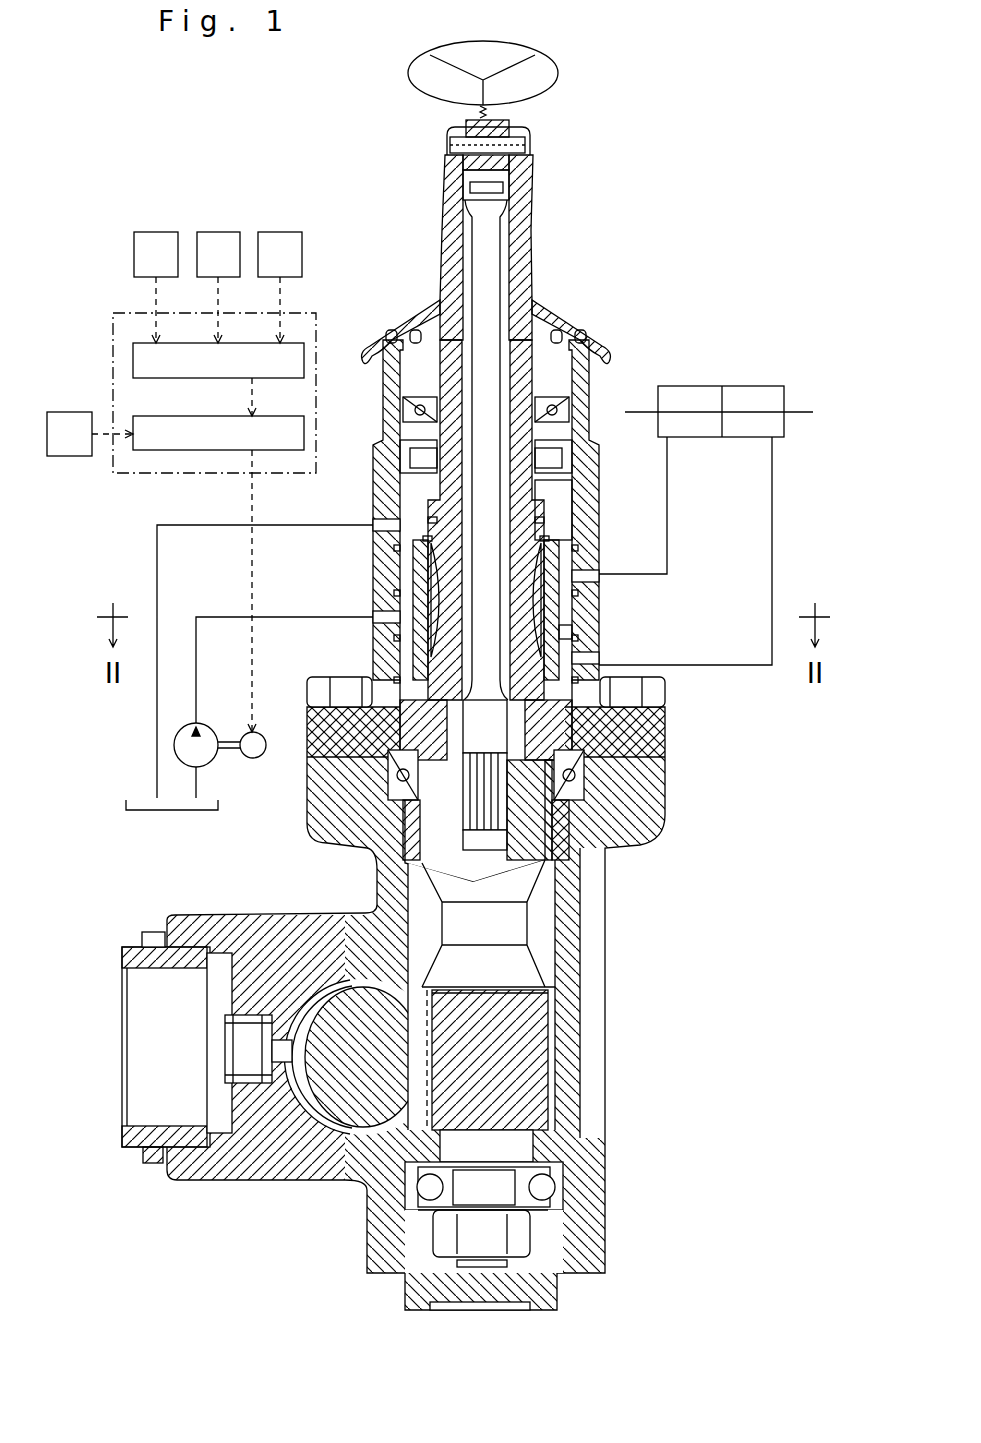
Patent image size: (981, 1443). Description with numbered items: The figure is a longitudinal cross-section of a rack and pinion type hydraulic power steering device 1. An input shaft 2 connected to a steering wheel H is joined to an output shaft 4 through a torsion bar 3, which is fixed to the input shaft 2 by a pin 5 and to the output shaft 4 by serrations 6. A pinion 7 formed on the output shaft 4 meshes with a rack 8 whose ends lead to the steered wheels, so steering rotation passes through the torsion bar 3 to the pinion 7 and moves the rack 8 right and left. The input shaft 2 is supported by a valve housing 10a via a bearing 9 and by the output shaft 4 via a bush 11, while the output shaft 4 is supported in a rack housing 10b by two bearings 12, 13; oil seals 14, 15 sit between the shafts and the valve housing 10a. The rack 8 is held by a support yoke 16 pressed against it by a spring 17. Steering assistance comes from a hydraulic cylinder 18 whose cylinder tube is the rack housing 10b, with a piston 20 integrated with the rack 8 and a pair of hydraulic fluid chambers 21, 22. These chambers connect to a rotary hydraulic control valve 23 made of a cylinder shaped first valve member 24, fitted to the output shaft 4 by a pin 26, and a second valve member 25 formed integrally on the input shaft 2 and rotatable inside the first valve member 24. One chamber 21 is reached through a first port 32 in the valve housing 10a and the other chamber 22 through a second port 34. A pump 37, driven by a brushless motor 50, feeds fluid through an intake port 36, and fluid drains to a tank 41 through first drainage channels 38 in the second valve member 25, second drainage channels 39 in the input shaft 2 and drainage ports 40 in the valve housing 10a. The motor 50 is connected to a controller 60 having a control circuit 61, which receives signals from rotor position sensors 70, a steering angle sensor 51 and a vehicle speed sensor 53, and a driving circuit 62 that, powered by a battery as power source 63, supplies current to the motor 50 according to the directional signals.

The steering wheel H is at (553, 88).
The hydraulic power steering device 1 is at (550, 161).
The input shaft 2 is at (533, 210).
The torsion bar 3 is at (490, 250).
The output shaft 4 is at (522, 897).
The pin 5 is at (450, 146).
The serrations 6 is at (535, 818).
The pinion 7 is at (531, 1038).
The rack 8 is at (355, 1098).
The bearing 9 is at (410, 458).
The valve housing 10a is at (383, 488).
The rack housing 10b is at (572, 1079).
The bush 11 is at (663, 737).
The bearing 12 is at (605, 860).
The bearing 13 is at (545, 1188).
The oil seal 14 is at (405, 413).
The oil seal 15 is at (576, 778).
The support yoke 16 is at (281, 1123).
The spring 17 is at (238, 1093).
The hydraulic cylinder 18 is at (750, 372).
The piston 20 is at (723, 427).
The hydraulic fluid chamber 21 is at (692, 433).
The hydraulic fluid chamber 22 is at (764, 393).
The hydraulic control valve 23 is at (570, 530).
The first valve member 24 is at (560, 608).
The second valve member 25 is at (560, 636).
The pin 26 is at (410, 703).
The first port 32 is at (575, 570).
The second port 34 is at (593, 658).
The intake port 36 is at (400, 603).
The pump 37 is at (196, 733).
The first drainage channels 38 is at (400, 640).
The second drainage channels 39 is at (430, 520).
The drainage ports 40 is at (395, 540).
The tank 41 is at (178, 812).
The brushless motor 50 is at (253, 760).
The steering angle sensor 51 is at (280, 248).
The vehicle speed sensor 53 is at (220, 248).
The controller 60 is at (113, 323).
The control circuit 61 is at (300, 357).
The driving circuit 62 is at (180, 443).
The power source 63 is at (70, 420).
The sensors 70 is at (162, 250).